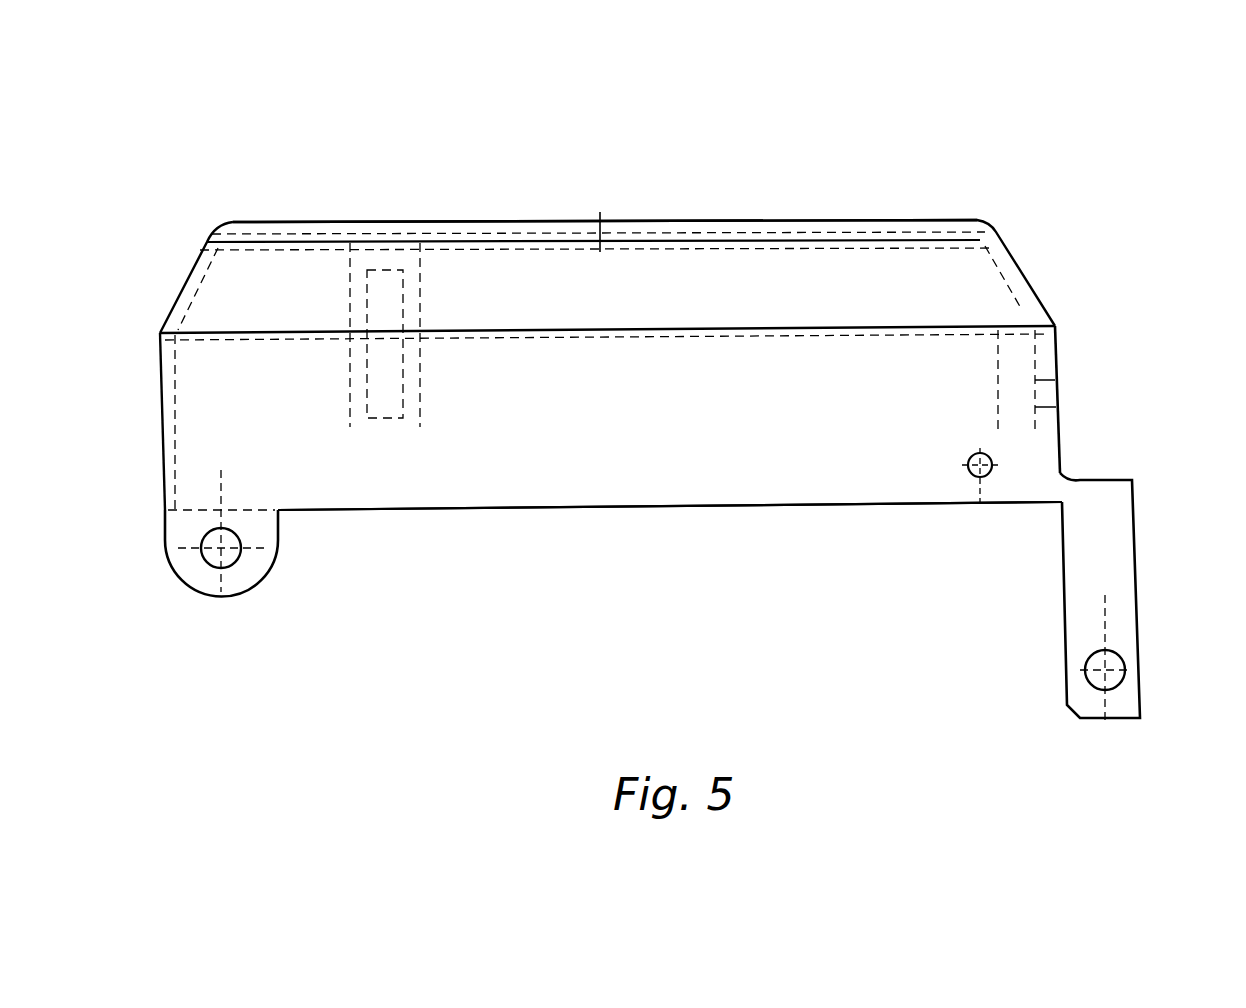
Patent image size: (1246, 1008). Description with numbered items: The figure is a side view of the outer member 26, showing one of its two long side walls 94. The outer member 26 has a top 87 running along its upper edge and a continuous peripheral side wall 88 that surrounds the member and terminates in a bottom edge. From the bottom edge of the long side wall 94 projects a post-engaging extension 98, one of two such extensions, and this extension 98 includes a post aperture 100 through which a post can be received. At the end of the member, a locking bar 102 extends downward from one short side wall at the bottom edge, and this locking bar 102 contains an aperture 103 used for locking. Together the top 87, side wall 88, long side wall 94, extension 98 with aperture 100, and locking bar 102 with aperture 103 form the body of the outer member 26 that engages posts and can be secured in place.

The outer member 26 is at (698, 165).
The top 87 is at (450, 232).
The continuous peripheral side wall 88 is at (525, 452).
The long side wall 94 is at (658, 398).
The post-engaging extension 98 is at (250, 583).
The post aperture 100 is at (243, 547).
The locking bar 102 is at (1130, 560).
The aperture 103 is at (1105, 670).